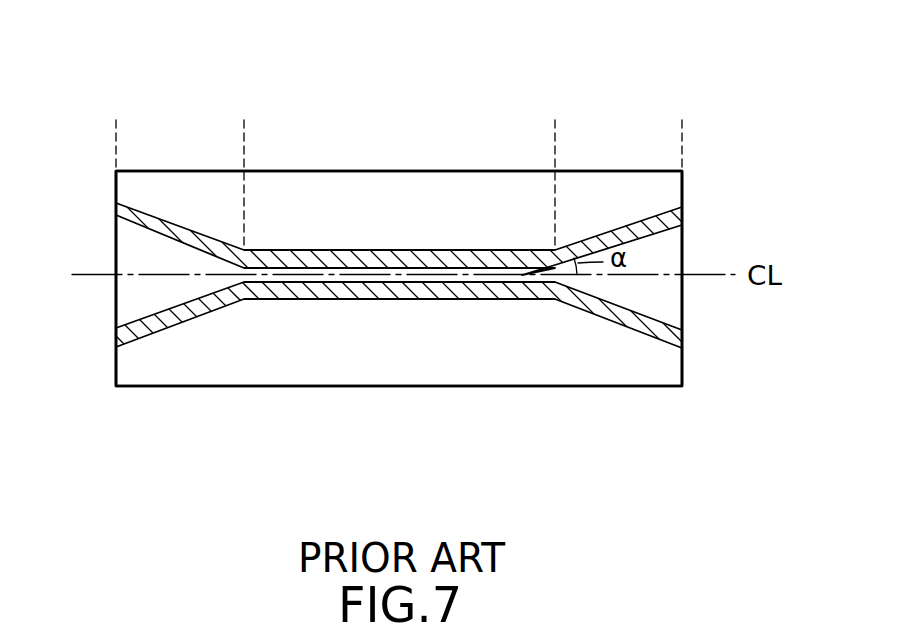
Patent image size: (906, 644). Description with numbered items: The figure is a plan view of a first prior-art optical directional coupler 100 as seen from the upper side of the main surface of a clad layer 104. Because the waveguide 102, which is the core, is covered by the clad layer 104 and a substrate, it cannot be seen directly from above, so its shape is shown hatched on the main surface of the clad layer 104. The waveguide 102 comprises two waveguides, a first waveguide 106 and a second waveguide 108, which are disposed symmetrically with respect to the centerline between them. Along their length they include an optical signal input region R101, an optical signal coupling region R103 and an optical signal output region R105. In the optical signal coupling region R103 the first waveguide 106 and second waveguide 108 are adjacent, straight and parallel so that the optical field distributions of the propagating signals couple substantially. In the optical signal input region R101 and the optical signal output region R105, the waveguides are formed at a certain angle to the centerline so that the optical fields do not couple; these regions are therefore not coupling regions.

The optical directional coupler 100 is at (712, 141).
The waveguide 102 is at (430, 347).
The clad layer 104 is at (183, 373).
The first waveguide 106 is at (408, 265).
The second waveguide 108 is at (468, 298).
The optical signal input region R101 is at (244, 102).
The optical signal coupling region R103 is at (555, 102).
The optical signal output region R105 is at (682, 102).